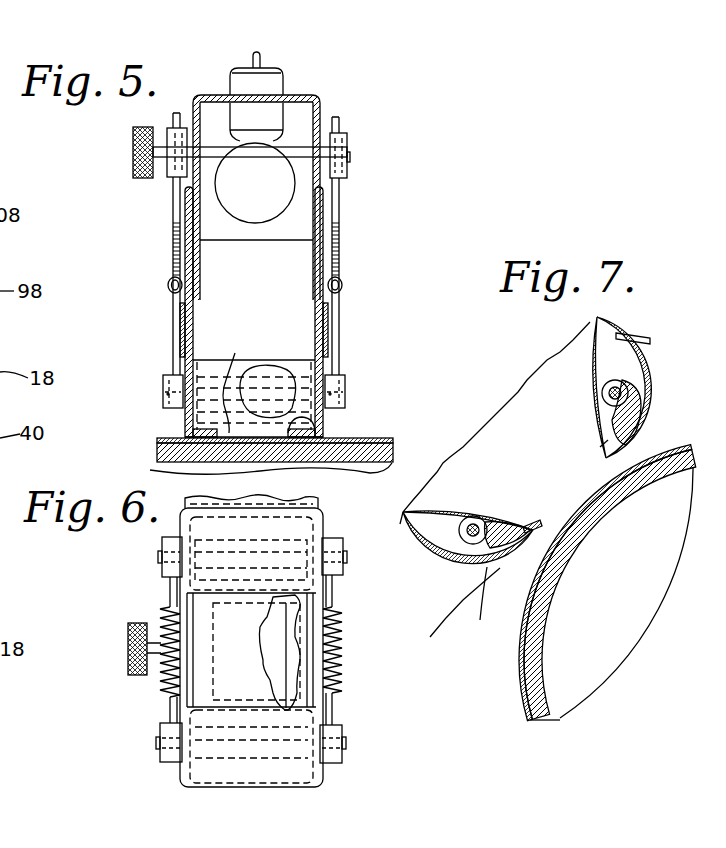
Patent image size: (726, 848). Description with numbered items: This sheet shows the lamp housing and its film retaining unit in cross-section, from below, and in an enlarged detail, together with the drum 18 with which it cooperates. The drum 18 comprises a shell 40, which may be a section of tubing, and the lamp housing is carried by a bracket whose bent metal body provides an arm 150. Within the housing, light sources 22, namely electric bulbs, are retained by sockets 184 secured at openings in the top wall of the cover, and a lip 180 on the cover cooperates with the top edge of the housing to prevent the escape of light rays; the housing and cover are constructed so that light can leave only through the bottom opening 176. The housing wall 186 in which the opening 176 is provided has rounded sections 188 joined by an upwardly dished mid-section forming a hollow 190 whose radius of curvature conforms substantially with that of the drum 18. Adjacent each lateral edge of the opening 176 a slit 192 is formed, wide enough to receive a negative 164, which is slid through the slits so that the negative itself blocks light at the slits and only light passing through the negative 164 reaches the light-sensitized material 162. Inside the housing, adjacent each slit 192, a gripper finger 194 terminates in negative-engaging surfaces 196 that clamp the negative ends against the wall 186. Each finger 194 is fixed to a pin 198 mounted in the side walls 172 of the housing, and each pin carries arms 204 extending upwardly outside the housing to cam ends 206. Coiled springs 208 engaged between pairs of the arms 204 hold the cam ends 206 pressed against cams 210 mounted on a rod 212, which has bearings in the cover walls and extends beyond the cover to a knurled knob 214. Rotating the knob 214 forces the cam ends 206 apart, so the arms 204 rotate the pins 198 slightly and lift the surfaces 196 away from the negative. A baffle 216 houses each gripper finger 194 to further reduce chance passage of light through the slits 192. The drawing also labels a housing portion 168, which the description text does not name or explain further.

In FIG. 5, the drum 18 is at (398, 456).
In FIG. 7, the drum 18 is at (528, 725).
In FIG. 5, the light sources 22 is at (262, 214).
In FIG. 5, the shell 40 is at (356, 470).
In FIG. 7, the shell 40 is at (545, 682).
In FIG. 7, the arm 150 is at (632, 337).
In FIG. 5, the light-sensitized material 162 is at (396, 444).
In FIG. 7, the light-sensitized material 162 is at (518, 660).
In FIG. 5, the negative 164 is at (255, 383).
In FIG. 6, the negative 164 is at (260, 652).
In FIG. 7, the negative 164 is at (592, 518).
In FIG. 5, the inner housing 168 is at (183, 304).
In FIG. 6, the inner housing 168 is at (251, 650).
In FIG. 5, the side walls 172 is at (197, 318).
In FIG. 5, the bottom opening 176 is at (312, 429).
In FIG. 6, the bottom opening 176 is at (300, 650).
In FIG. 7, the bottom opening 176 is at (590, 445).
In FIG. 5, the lip 180 is at (330, 221).
In FIG. 6, the lip 180 is at (251, 641).
In FIG. 5, the sockets 184 is at (283, 78).
In FIG. 7, the housing wall 186 is at (466, 606).
In FIG. 7, the rounded sections 188 is at (453, 616).
In FIG. 5, the hollow 190 is at (180, 458).
In FIG. 7, the hollow 190 is at (580, 487).
In FIG. 7, the slit 192 is at (537, 520).
In FIG. 5, the gripper finger 194 is at (270, 370).
In FIG. 6, the gripper finger 194 is at (325, 779).
In FIG. 7, the gripper finger 194 is at (650, 405).
In FIG. 7, the negative-engaging surfaces 196 is at (633, 443).
In FIG. 5, the pin 198 is at (165, 396).
In FIG. 6, the pin 198 is at (160, 562).
In FIG. 7, the pin 198 is at (627, 388).
In FIG. 5, the arms 204 is at (181, 328).
In FIG. 6, the arms 204 is at (167, 574).
In FIG. 5, the cam ends 206 is at (174, 118).
In FIG. 5, the coiled springs 208 is at (168, 286).
In FIG. 6, the coiled springs 208 is at (162, 679).
In FIG. 5, the cams 210 is at (171, 180).
In FIG. 5, the rod 212 is at (286, 153).
In FIG. 5, the knurled knob 214 is at (137, 178).
In FIG. 6, the knurled knob 214 is at (128, 623).
In FIG. 7, the baffle 216 is at (592, 412).